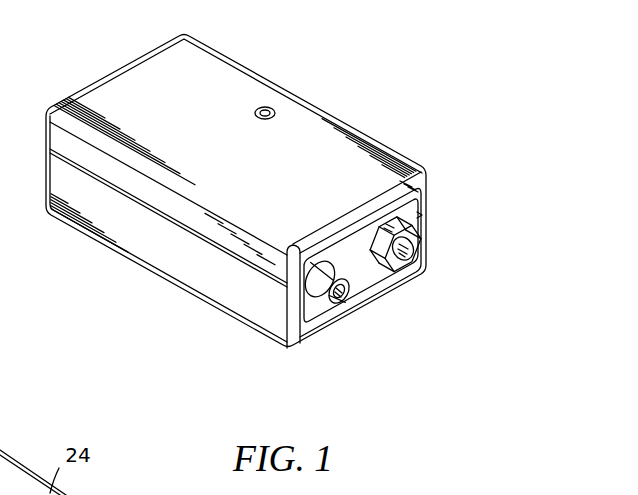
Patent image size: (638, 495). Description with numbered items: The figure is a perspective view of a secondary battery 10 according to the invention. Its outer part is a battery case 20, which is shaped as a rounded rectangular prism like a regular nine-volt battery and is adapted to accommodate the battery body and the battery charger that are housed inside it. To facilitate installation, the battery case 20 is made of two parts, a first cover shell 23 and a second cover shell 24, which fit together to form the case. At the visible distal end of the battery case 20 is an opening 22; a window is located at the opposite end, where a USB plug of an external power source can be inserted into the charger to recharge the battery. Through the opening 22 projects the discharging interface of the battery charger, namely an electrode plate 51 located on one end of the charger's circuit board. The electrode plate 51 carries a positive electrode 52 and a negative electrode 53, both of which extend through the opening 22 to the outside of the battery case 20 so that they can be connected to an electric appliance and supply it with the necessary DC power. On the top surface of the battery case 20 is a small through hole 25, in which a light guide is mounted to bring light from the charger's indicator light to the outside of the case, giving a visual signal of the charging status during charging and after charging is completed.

The secondary battery 10 is at (339, 67).
The battery case 20 is at (125, 263).
The opening 22 is at (309, 302).
The first cover shell 23 is at (184, 276).
The second cover shell 24 is at (343, 148).
The through hole 25 is at (266, 107).
The electrode plate 51 is at (368, 278).
The positive electrode 52 is at (348, 305).
The negative electrode 53 is at (413, 268).